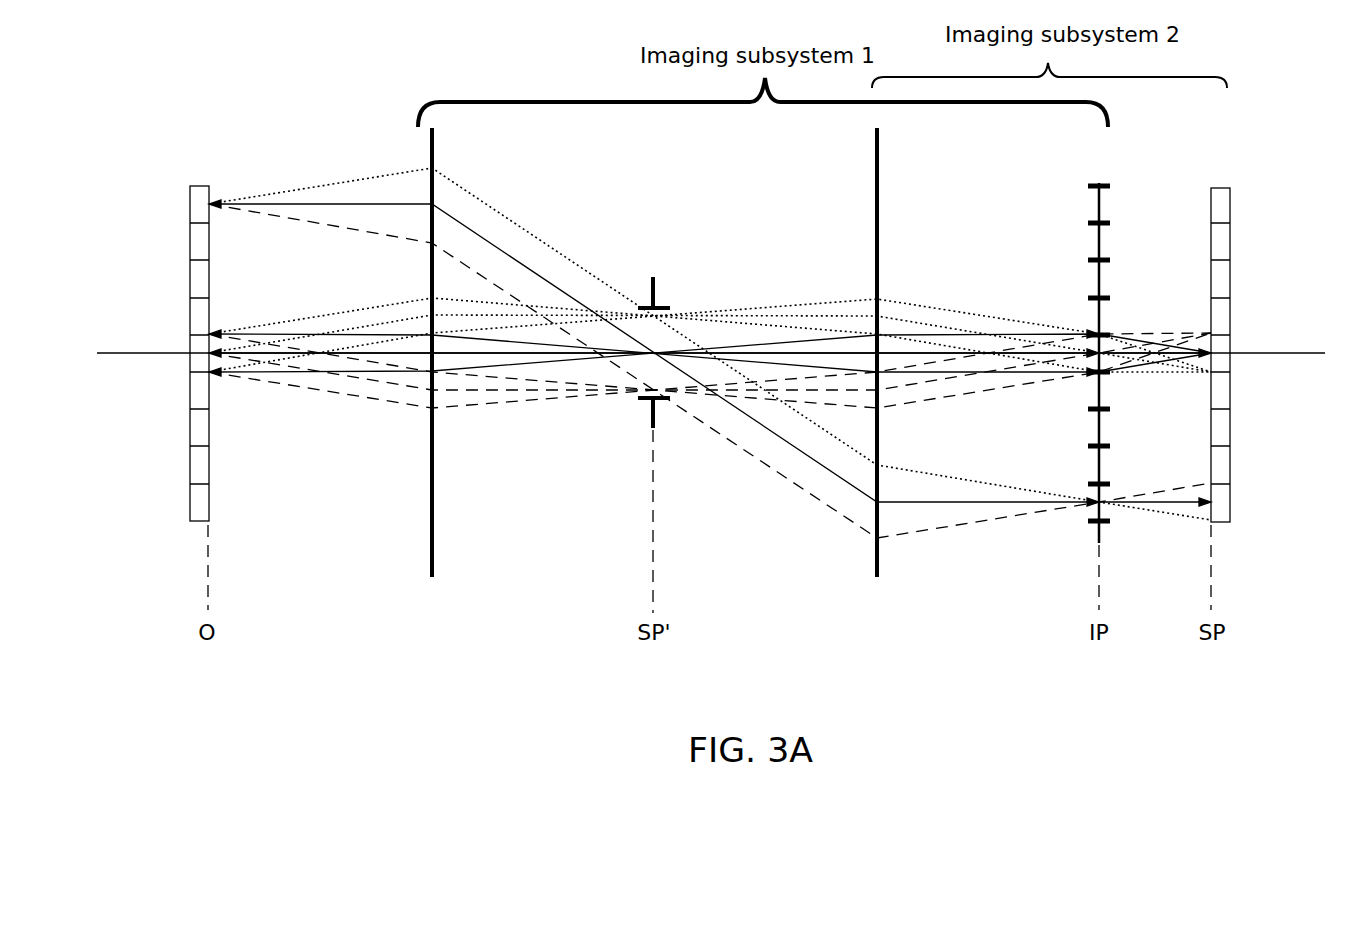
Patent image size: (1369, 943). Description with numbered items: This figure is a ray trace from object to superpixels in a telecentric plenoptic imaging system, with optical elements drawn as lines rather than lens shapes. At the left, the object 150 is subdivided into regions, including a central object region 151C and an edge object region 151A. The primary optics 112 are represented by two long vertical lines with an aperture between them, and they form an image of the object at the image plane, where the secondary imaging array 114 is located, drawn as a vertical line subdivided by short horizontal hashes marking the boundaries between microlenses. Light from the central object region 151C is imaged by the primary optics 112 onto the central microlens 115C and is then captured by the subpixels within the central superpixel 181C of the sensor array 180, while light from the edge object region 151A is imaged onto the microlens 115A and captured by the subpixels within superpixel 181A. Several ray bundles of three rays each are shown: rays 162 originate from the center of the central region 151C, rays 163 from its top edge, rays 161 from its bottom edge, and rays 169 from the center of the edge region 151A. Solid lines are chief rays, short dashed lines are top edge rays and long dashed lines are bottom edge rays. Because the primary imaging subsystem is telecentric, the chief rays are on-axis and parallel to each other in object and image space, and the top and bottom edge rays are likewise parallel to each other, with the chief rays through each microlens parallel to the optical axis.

The object 150 is at (218, 176).
The edge object region 151A is at (200, 208).
The central object region 151C is at (200, 335).
The rays from center of edge region 169 is at (222, 203).
The rays from top edge of central region 163 is at (222, 333).
The rays from center of central region 162 is at (222, 358).
The rays from bottom edge of central region 161 is at (218, 375).
The primary optics 112 is at (785, 209).
The secondary imaging array 114 is at (1118, 179).
The central microlens 115C is at (1103, 340).
The edge microlens 115A is at (1105, 497).
The sensor array 180 is at (1240, 181).
The central superpixel 181C is at (1222, 345).
The edge superpixel 181A is at (1222, 505).